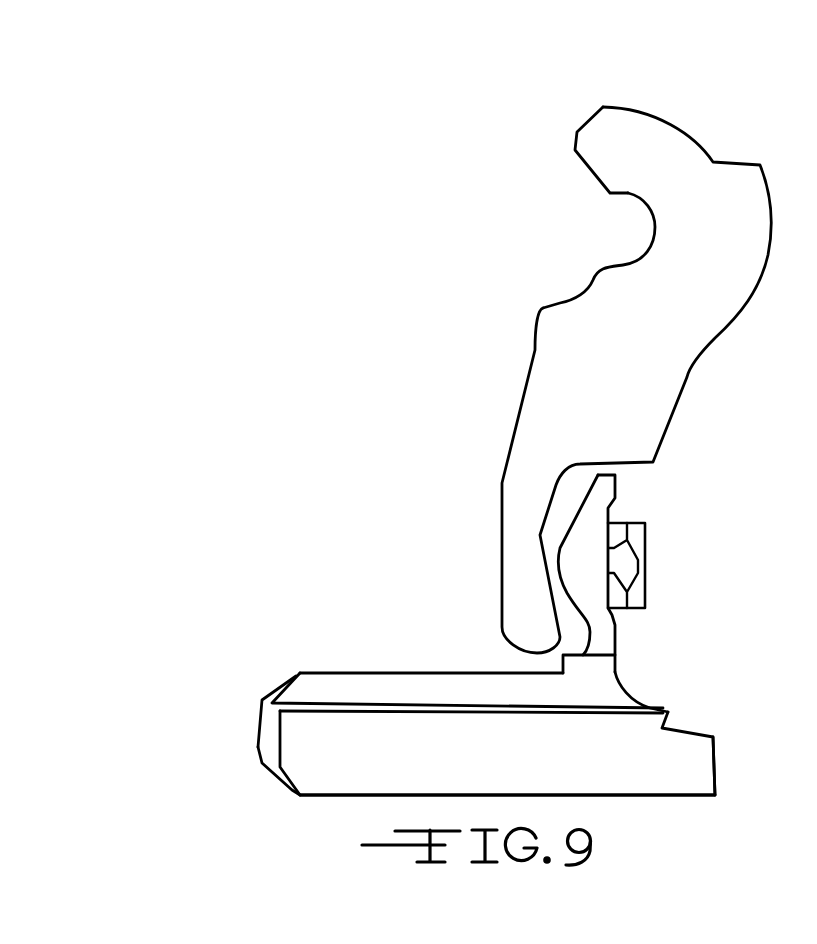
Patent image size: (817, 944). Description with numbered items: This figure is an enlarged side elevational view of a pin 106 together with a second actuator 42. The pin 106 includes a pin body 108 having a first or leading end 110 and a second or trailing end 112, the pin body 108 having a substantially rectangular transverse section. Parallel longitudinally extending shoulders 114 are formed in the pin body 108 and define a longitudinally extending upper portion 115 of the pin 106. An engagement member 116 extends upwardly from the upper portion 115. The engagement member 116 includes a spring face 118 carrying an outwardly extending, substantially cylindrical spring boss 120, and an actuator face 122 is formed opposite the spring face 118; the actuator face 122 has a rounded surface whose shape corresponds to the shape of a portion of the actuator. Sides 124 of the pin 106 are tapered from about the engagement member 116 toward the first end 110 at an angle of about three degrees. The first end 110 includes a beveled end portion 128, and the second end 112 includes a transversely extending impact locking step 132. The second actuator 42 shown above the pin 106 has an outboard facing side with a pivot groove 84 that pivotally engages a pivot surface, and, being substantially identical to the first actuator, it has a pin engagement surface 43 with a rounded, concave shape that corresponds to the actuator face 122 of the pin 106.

The second actuator 42 is at (622, 98).
The pivot groove 84 is at (630, 195).
The pin engagement surface 43 is at (540, 557).
The actuator face 122 is at (575, 512).
The spring face 118 is at (616, 485).
The spring boss 120 is at (647, 535).
The engagement member 116 is at (630, 638).
The pin 106 is at (300, 656).
The shoulders 114 is at (338, 708).
The upper portion 115 is at (432, 685).
The first end 110 is at (257, 733).
The beveled end portion 128 is at (263, 757).
The sides 124 is at (463, 770).
The impact locking step 132 is at (673, 717).
The second end 112 is at (718, 758).
The pin body 108 is at (700, 776).